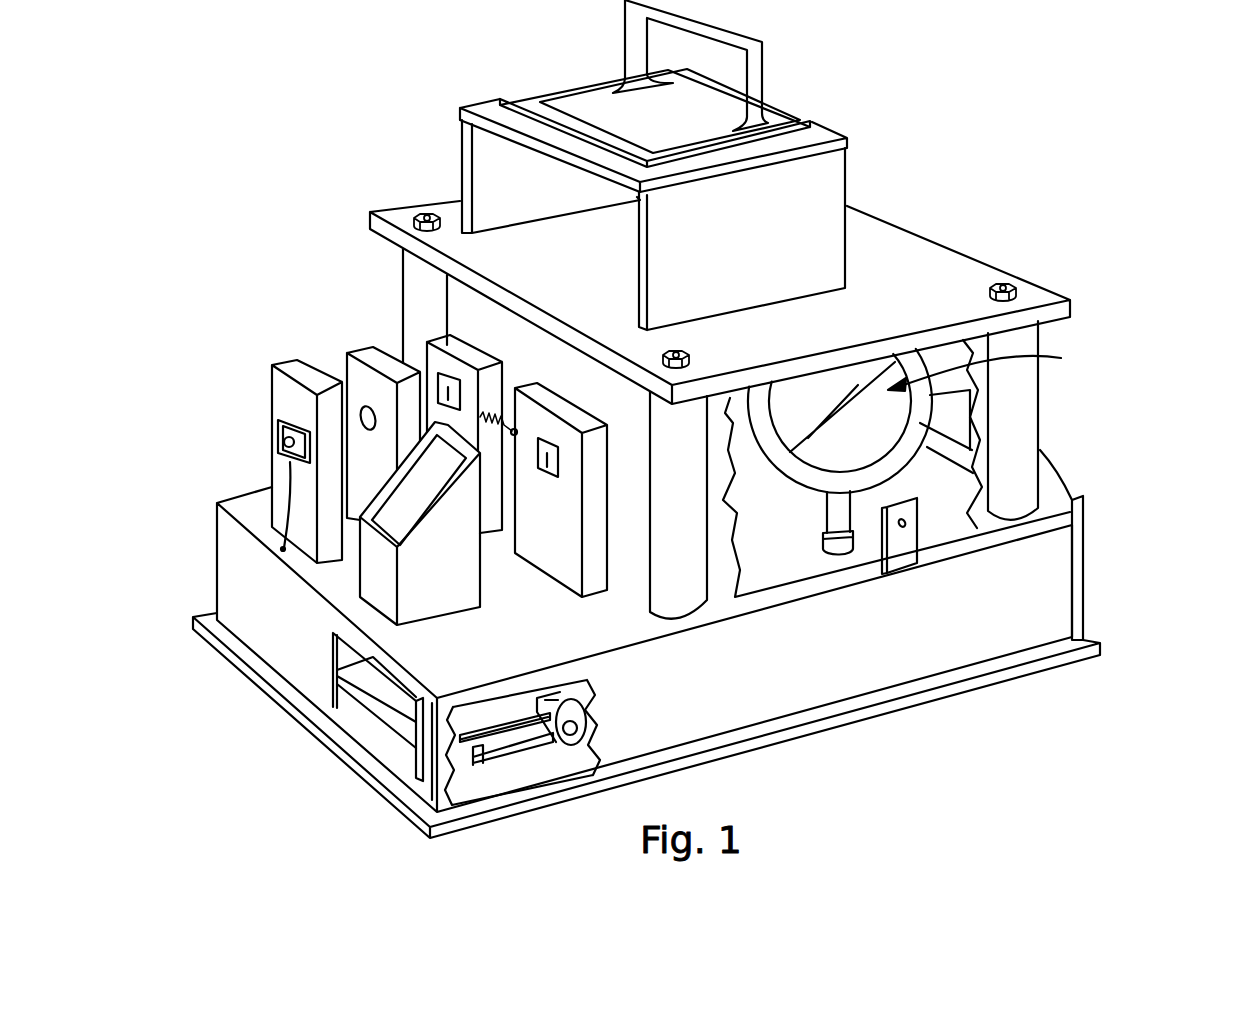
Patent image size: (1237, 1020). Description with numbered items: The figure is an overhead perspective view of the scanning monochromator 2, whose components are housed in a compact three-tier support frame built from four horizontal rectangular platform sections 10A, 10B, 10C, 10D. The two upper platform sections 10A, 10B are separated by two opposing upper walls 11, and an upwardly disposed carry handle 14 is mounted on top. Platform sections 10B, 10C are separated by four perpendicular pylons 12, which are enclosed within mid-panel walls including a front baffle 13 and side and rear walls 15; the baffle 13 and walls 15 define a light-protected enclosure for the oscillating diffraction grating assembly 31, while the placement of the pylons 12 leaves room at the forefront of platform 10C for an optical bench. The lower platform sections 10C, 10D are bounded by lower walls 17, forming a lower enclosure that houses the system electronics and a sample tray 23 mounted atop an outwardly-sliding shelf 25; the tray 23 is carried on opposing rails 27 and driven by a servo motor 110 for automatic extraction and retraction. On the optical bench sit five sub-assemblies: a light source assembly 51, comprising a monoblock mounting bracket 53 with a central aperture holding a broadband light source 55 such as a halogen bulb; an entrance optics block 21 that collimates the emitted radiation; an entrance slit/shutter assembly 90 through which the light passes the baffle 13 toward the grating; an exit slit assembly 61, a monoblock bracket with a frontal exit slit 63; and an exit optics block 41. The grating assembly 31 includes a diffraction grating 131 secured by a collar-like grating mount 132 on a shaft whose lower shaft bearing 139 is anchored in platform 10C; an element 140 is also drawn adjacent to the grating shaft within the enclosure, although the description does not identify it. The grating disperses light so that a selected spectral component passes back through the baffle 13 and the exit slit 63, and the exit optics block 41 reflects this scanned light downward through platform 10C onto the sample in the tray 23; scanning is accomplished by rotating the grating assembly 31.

The scanning monochromator 2 is at (340, 126).
The upper platform section 10A is at (847, 137).
The upper platform section 10B is at (1060, 310).
The platform section 10C is at (1063, 535).
The lower platform section 10D is at (1100, 647).
The upper walls 11 is at (835, 177).
The pylons 12 is at (1030, 428).
The front baffle 13 is at (570, 379).
The carry handle 14 is at (760, 62).
The side and rear walls 15 is at (730, 570).
The lower walls 17 is at (308, 658).
The entrance optics block 21 is at (345, 357).
The sample tray 23 is at (387, 698).
The outwardly-sliding shelf 25 is at (411, 763).
The rails 27 is at (515, 757).
The diffraction grating assembly 31 is at (987, 366).
The exit optics block 41 is at (448, 577).
The light source assembly 51 is at (269, 363).
The monoblock mounting bracket 53 is at (278, 398).
The broadband light source 55 is at (278, 442).
The exit slit assembly 61 is at (605, 485).
The exit slit 63 is at (542, 473).
The entrance slit/shutter assembly 90 is at (430, 345).
The servo motor 110 is at (563, 693).
The diffraction grating 131 is at (858, 460).
The grating mount 132 is at (810, 483).
The lower shaft bearing 139 is at (843, 552).
The stem 140 is at (847, 503).